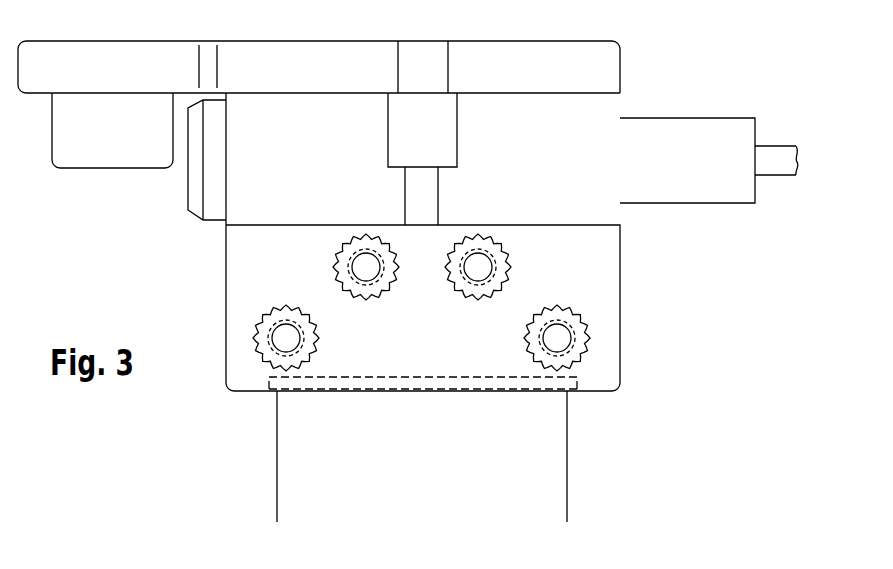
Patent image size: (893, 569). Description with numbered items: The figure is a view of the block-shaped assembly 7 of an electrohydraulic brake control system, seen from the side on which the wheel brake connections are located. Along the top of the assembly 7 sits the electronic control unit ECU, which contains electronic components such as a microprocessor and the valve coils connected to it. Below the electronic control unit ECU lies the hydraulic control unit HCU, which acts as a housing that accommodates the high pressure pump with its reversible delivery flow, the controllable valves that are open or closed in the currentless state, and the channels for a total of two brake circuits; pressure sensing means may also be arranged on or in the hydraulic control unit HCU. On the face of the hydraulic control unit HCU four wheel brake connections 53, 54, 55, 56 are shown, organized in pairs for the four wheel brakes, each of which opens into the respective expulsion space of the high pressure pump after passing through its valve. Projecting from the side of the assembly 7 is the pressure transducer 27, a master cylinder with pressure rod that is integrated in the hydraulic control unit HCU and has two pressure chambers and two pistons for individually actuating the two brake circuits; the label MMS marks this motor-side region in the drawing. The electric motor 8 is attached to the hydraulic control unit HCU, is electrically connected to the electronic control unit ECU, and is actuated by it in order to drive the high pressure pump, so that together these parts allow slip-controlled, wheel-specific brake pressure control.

The electronic control unit ECU is at (601, 69).
The motor MMS is at (771, 155).
The pressure transducer 27 is at (720, 205).
The hydraulic control unit HCU is at (600, 362).
The assembly 7 is at (621, 274).
The wheel brake connection 53 is at (276, 349).
The wheel brake connection 54 is at (366, 272).
The wheel brake connection 55 is at (478, 272).
The wheel brake connection 56 is at (567, 349).
The electric motor 8 is at (545, 475).